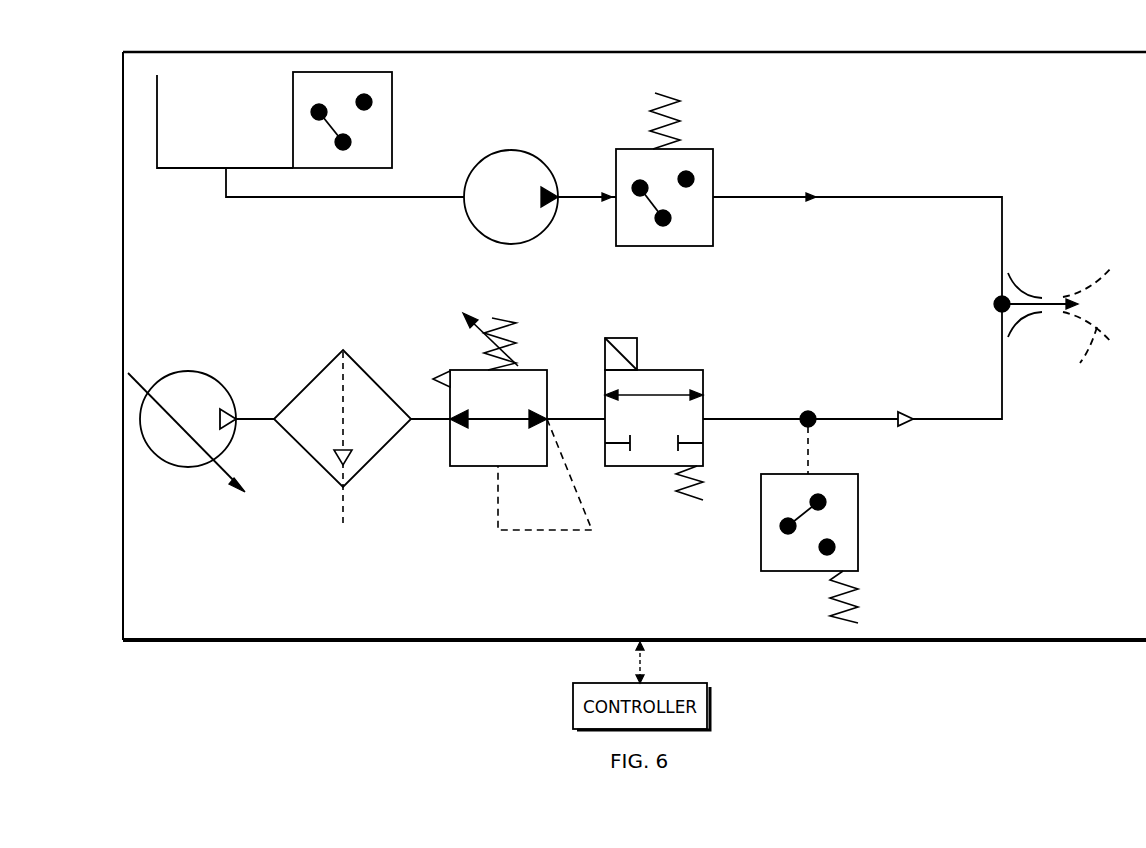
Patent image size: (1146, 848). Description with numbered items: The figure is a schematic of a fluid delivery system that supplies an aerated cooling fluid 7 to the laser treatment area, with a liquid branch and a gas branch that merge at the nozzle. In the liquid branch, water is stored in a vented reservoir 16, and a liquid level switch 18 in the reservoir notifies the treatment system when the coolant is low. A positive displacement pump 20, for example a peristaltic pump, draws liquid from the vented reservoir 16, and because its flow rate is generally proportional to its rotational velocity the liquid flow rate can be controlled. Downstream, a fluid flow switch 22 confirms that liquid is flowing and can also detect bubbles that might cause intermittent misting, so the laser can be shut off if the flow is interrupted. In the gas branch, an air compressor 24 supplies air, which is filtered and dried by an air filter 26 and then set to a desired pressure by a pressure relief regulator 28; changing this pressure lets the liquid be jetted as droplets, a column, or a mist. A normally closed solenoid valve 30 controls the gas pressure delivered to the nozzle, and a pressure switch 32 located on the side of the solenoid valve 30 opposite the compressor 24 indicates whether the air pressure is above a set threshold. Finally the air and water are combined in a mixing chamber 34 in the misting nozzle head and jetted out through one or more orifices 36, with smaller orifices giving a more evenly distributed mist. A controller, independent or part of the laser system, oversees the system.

The cooling fluid 7 is at (1082, 362).
The vented reservoir 16 is at (160, 137).
The liquid level switch 18 is at (394, 102).
The positive displacement pump 20 is at (470, 221).
The fluid flow switch 22 is at (702, 149).
The air compressor 24 is at (190, 468).
The air filter 26 is at (336, 480).
The pressure relief regulator 28 is at (490, 468).
The solenoid valve 30 is at (668, 468).
The pressure switch 32 is at (803, 573).
The mixing chamber 34 is at (996, 306).
The orifices 36 is at (1020, 285).